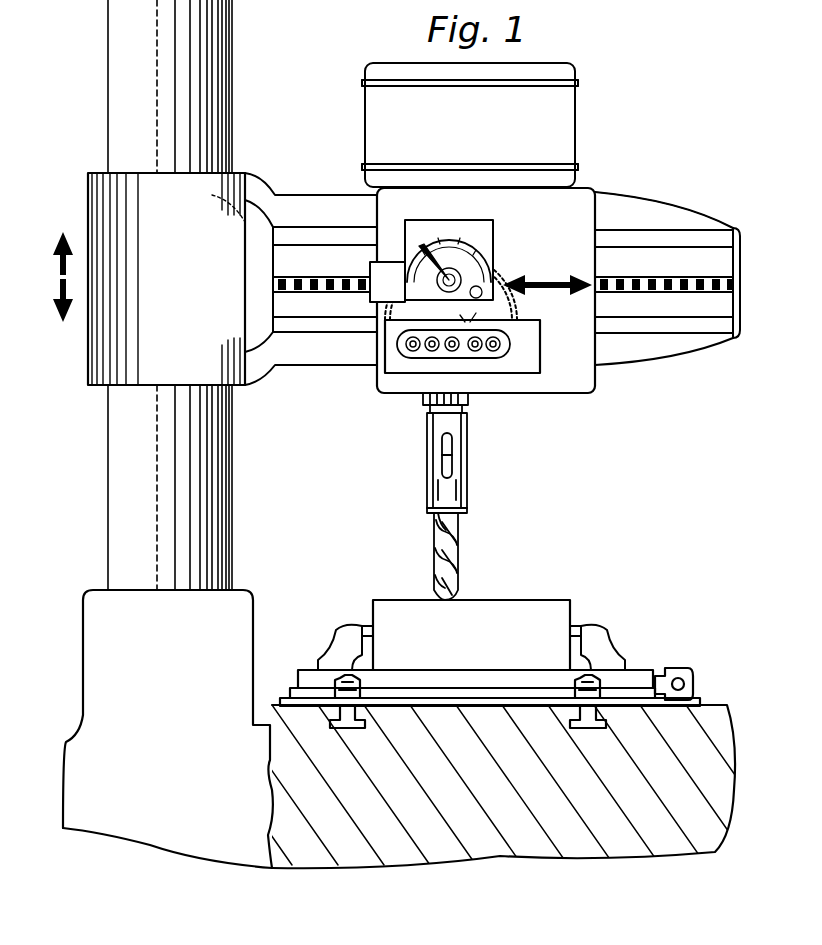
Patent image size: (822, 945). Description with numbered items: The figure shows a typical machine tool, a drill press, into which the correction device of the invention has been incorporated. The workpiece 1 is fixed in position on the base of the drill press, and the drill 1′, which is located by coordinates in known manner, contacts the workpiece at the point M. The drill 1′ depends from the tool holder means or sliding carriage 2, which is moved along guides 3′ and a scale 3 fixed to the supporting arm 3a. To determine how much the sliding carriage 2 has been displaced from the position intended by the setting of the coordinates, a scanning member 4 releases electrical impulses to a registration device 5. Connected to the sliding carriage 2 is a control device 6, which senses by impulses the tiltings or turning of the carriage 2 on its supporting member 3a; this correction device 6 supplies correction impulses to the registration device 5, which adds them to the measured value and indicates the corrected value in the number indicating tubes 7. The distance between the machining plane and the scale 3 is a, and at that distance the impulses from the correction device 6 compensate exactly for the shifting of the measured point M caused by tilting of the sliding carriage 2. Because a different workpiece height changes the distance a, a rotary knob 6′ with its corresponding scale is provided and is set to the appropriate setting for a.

The workpiece 1 is at (525, 608).
The drill 1′ is at (455, 540).
The sliding carriage 2 is at (582, 240).
The scale 3 is at (300, 283).
The supporting arm 3a is at (684, 210).
The guides 3′ is at (706, 240).
The scanning member 4 is at (378, 280).
The registration device 5 is at (504, 364).
The control device 6 is at (480, 282).
The rotary knob 6′ is at (438, 282).
The number indicating tubes 7 is at (493, 352).
The measured point M is at (450, 600).
The distance a is at (655, 292).